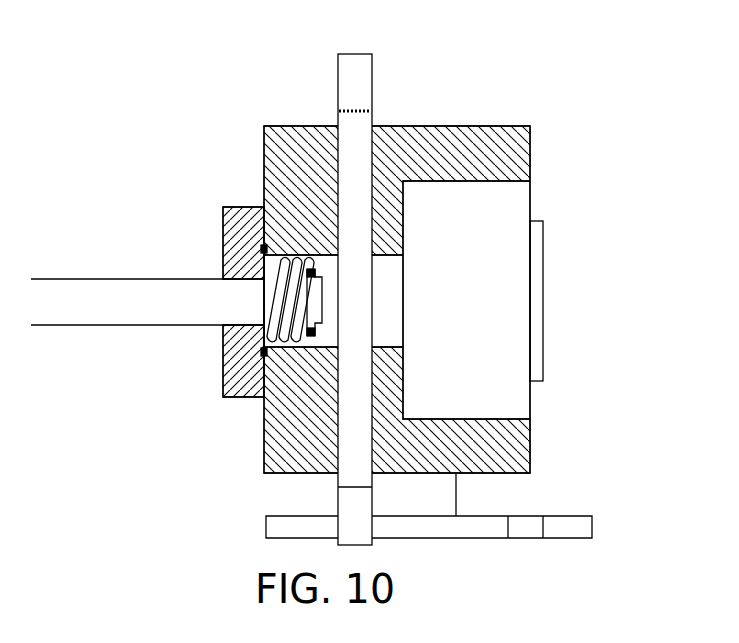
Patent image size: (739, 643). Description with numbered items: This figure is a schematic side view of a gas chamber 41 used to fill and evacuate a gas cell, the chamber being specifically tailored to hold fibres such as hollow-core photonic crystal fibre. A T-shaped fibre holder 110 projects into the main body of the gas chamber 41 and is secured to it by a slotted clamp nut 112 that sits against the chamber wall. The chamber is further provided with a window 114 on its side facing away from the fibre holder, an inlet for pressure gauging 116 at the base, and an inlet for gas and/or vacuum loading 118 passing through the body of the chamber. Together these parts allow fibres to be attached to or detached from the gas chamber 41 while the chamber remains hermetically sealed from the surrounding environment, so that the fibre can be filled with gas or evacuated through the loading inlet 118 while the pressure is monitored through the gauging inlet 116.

The gas chamber 41 is at (245, 67).
The T-shaped fibre holder 110 is at (70, 325).
The slotted clamp nut 112 is at (223, 243).
The window 114 is at (543, 265).
The inlet for pressure gauging 116 is at (338, 495).
The inlet for gas and/or vacuum loading 118 is at (373, 78).